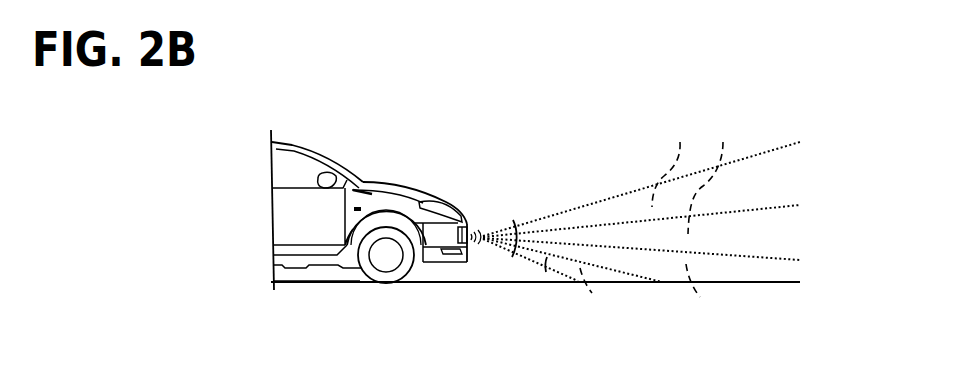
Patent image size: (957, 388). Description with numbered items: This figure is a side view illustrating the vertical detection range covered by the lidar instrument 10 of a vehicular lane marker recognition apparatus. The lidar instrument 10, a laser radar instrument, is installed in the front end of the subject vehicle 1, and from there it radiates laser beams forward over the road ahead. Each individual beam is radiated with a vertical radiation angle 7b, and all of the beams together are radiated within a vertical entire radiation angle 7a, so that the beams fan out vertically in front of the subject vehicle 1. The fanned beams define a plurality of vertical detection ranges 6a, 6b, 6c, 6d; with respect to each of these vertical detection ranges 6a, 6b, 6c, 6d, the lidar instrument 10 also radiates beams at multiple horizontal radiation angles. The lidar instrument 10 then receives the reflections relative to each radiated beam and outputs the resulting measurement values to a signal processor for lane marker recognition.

The subject vehicle 1 is at (348, 174).
The lidar instrument 10 is at (463, 226).
The vertical entire radiation angle 7a is at (516, 231).
The vertical radiation angle 7b is at (545, 263).
The vertical detection range 6a is at (674, 160).
The vertical detection range 6b is at (714, 173).
The vertical detection range 6c is at (701, 301).
The vertical detection range 6d is at (593, 303).